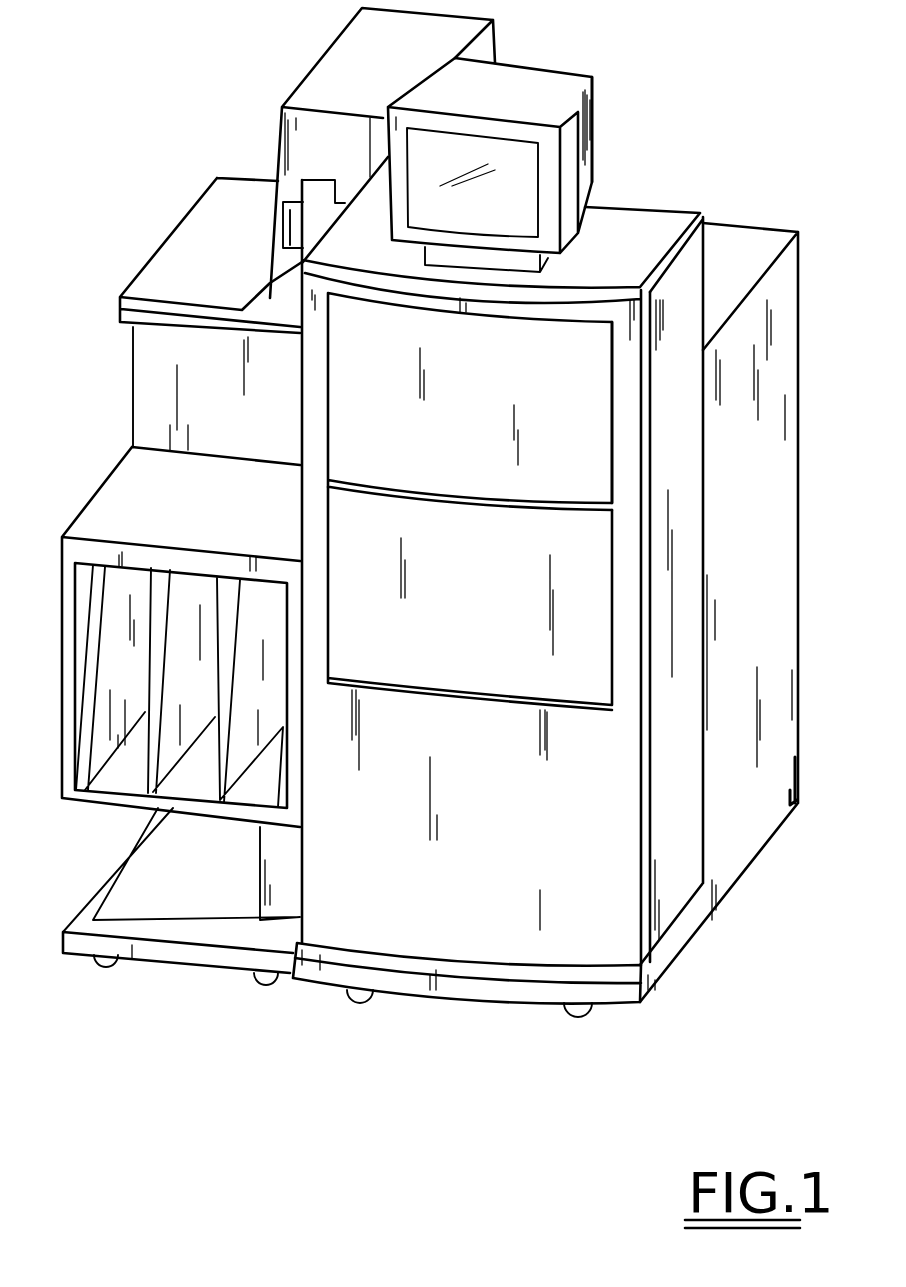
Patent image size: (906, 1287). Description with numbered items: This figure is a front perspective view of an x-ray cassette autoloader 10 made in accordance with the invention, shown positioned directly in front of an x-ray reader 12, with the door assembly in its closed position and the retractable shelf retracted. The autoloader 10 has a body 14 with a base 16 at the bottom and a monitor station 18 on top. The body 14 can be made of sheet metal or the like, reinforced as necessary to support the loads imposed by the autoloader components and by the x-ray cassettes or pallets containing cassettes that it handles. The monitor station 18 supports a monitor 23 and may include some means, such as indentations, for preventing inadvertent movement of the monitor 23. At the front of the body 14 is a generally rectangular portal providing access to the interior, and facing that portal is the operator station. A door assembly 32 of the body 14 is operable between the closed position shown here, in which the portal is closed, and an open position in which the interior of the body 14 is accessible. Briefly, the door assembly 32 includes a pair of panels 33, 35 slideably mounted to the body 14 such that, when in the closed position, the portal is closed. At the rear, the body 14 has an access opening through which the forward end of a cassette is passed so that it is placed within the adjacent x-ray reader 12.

The autoloader 10 is at (657, 209).
The x-ray reader 12 is at (742, 221).
The body 14 is at (682, 648).
The base 16 is at (680, 920).
The monitor station 18 is at (560, 68).
The monitor 23 is at (582, 135).
The door assembly 32 is at (612, 435).
The panel 33 is at (470, 447).
The panel 35 is at (465, 641).